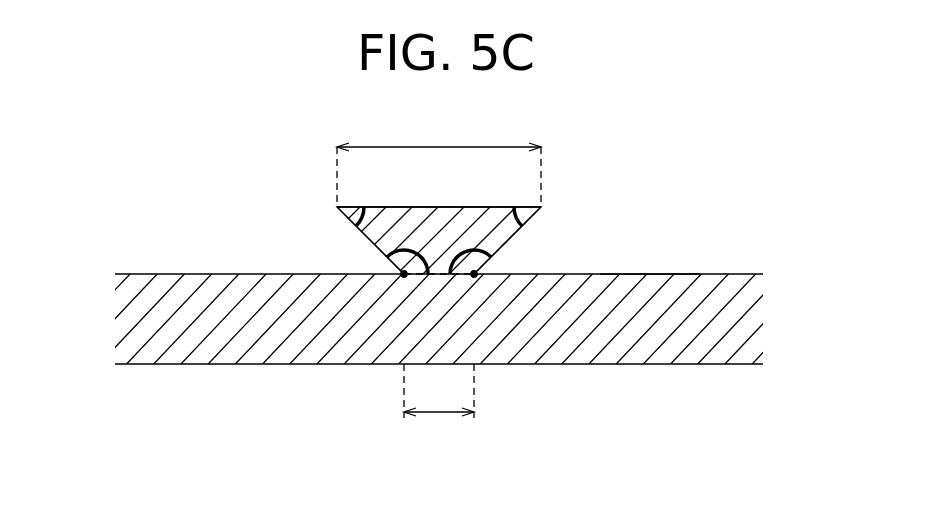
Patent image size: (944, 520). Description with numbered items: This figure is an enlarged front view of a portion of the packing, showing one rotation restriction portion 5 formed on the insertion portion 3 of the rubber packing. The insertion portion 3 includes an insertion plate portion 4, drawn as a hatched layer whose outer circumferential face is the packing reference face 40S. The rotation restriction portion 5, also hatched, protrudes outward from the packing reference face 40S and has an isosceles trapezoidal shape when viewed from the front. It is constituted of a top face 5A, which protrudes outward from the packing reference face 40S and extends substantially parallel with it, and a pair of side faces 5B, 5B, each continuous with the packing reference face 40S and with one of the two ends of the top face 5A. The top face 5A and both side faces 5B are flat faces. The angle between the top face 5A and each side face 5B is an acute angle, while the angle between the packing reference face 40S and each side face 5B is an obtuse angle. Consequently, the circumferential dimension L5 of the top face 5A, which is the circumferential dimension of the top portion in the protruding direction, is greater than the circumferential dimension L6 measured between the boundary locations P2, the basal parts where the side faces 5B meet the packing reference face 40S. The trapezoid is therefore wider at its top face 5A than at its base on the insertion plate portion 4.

The insertion portion 3 is at (820, 347).
The insertion plate portion 4 is at (707, 285).
The rotation restriction portion 5 is at (473, 220).
The packing reference face 40S is at (648, 274).
The top face 5A is at (408, 207).
The side face 5B is at (362, 242).
The circumferential dimension of the top face L5 is at (437, 147).
The circumferential dimension between boundary locations L6 is at (437, 412).
The boundary location P2 is at (404, 274).